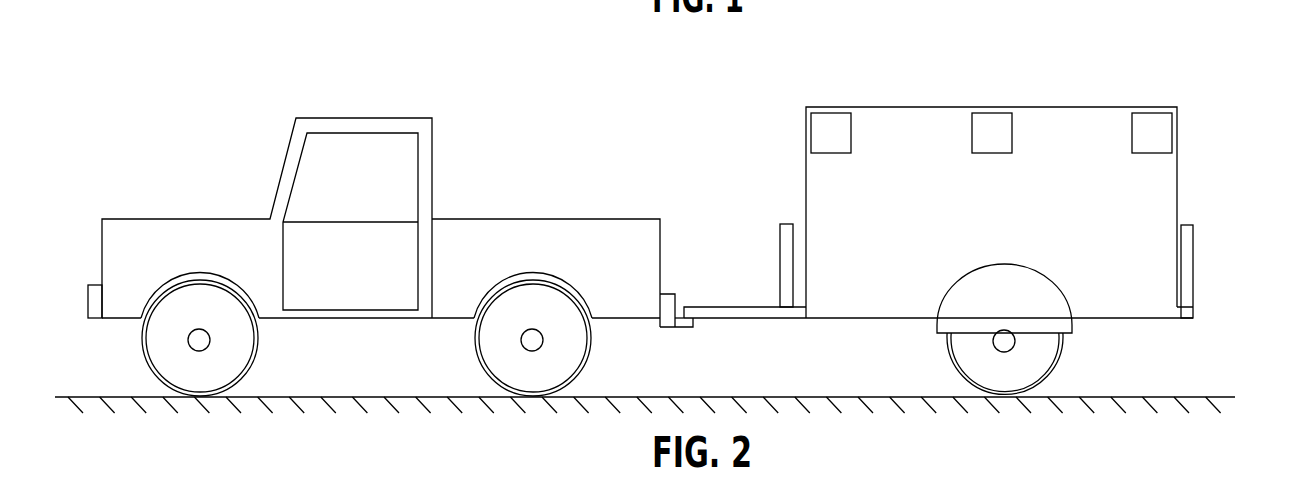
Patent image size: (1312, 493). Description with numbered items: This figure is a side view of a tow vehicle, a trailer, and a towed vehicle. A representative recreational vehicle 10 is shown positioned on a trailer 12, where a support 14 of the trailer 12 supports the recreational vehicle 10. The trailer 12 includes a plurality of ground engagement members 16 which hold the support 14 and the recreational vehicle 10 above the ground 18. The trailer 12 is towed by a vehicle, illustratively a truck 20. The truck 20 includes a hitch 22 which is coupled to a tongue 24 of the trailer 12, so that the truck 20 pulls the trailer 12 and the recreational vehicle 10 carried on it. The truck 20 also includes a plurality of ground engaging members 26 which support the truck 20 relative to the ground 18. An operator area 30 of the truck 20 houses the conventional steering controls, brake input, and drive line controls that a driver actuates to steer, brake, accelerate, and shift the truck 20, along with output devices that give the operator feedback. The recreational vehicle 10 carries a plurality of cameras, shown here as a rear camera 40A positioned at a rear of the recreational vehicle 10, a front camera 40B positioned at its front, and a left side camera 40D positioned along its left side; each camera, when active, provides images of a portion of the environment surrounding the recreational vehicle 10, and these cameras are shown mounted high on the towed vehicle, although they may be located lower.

The recreational vehicle 10 is at (1133, 280).
The trailer 12 is at (989, 232).
The support 14 is at (800, 306).
The ground engagement members 16 is at (1008, 374).
The ground 18 is at (108, 393).
The truck 20 is at (401, 245).
The hitch 22 is at (695, 332).
The tongue 24 is at (715, 300).
The ground engaging members 26 is at (197, 379).
The operator area 30 is at (362, 158).
The rear camera 40A is at (1176, 133).
The front camera 40B is at (809, 133).
The left side camera 40D is at (987, 106).